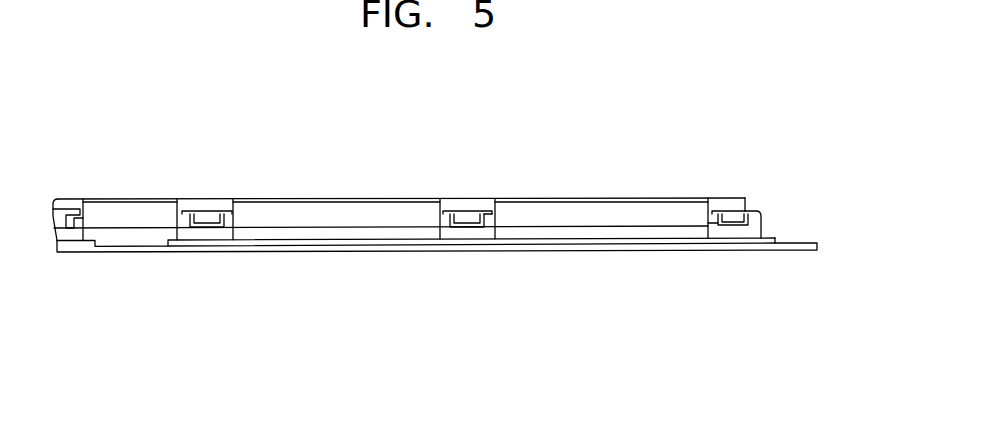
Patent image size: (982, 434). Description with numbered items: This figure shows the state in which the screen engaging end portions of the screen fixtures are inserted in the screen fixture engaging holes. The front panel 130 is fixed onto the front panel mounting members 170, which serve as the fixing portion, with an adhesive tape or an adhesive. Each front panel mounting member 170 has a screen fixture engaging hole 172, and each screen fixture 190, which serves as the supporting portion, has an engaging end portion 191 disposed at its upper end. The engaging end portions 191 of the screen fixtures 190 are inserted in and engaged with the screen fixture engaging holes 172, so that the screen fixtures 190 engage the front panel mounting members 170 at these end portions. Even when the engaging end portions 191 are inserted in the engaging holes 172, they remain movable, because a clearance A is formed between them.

The front panel 130 is at (722, 246).
The front panel mounting member 170 is at (778, 209).
The screen fixture engaging hole 172 is at (750, 213).
The screen fixture 190 is at (672, 197).
The engaging end portion 191 is at (470, 217).
The clearance A is at (489, 228).